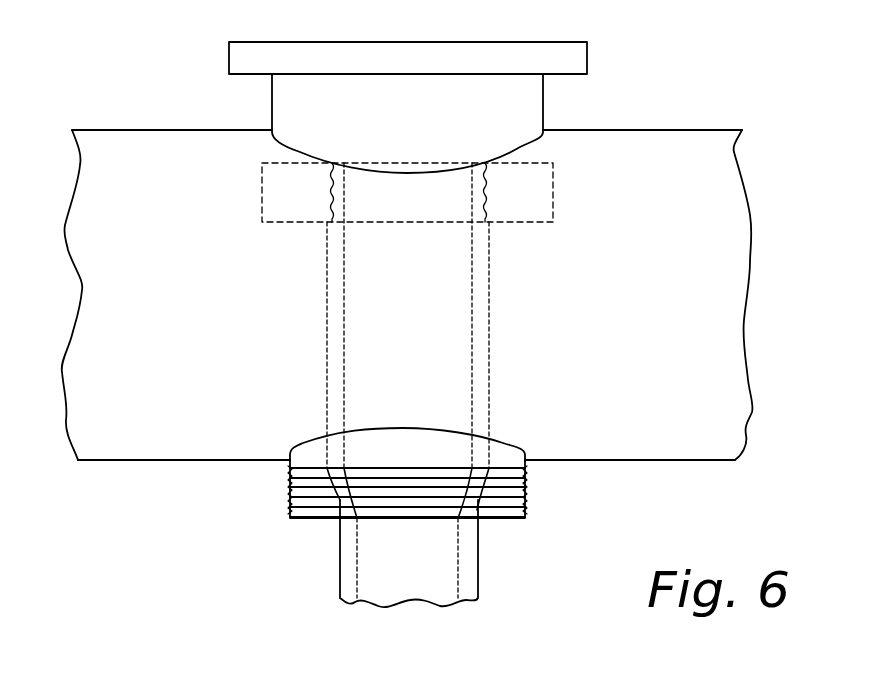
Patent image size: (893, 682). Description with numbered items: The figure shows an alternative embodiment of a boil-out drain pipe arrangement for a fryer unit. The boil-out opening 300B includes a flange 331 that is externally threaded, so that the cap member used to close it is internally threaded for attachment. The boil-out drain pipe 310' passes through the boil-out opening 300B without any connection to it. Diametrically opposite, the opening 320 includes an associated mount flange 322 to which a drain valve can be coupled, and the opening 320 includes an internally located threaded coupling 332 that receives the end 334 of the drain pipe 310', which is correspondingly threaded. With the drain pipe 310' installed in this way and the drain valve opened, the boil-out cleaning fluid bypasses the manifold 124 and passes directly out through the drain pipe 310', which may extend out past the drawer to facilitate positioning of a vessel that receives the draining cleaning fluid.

The manifold 124 is at (158, 143).
The opening 320 is at (408, 172).
The mount flange 322 is at (545, 101).
The threaded coupling 332 is at (518, 223).
The end of the drain pipe 334 is at (344, 181).
The boil-out opening 300B is at (407, 430).
The flange 331 is at (290, 499).
The boil-out drain pipe 310' is at (308, 560).